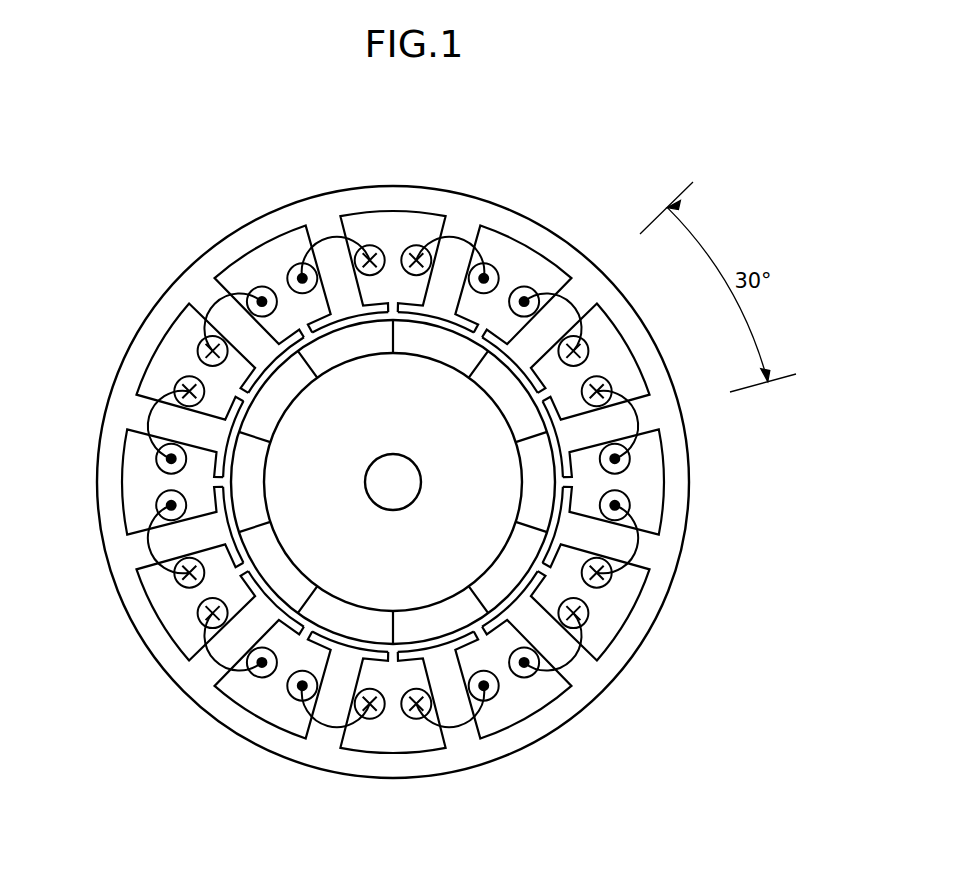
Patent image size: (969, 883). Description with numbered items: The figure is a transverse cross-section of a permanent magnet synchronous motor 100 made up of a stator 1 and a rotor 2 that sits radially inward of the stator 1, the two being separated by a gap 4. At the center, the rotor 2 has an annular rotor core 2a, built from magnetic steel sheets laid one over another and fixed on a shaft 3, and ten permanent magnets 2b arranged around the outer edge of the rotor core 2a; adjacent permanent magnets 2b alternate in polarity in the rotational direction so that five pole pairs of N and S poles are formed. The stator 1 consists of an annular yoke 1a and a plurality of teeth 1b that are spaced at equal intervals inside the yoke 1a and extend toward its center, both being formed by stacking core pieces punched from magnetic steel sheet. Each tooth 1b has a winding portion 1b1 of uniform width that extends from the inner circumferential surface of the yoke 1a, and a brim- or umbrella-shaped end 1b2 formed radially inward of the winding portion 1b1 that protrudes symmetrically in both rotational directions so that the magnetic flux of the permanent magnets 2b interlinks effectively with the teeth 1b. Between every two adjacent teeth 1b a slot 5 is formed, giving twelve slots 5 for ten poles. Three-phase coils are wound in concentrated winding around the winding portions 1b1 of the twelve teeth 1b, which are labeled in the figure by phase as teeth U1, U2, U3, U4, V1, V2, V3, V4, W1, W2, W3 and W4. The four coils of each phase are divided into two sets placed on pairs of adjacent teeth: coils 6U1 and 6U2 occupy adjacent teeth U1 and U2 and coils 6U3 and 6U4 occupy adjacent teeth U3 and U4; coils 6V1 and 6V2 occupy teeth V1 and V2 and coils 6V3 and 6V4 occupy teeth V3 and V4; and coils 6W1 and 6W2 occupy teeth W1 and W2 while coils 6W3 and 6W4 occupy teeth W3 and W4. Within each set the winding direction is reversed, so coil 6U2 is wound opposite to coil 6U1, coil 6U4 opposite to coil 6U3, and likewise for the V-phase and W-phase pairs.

The permanent magnet synchronous motor 100 is at (463, 108).
The stator 1 is at (541, 222).
The yoke 1a is at (660, 408).
The teeth 1b is at (782, 447).
The winding portion 1b1 is at (655, 427).
The end 1b2 is at (568, 452).
The rotor 2 is at (287, 462).
The rotor core 2a is at (300, 490).
The permanent magnets 2b is at (233, 520).
The shaft 3 is at (401, 508).
The gap 4 is at (310, 627).
The slot 5 is at (552, 707).
The coil 6U1 is at (627, 393).
The coil 6U2 is at (575, 300).
The coil 6U3 is at (140, 548).
The coil 6U4 is at (213, 667).
The coil 6V1 is at (460, 237).
The coil 6V2 is at (322, 233).
The coil 6V3 is at (327, 732).
The coil 6V4 is at (457, 730).
The coil 6W1 is at (600, 672).
The coil 6W2 is at (640, 552).
The coil 6W3 is at (210, 298).
The coil 6W4 is at (142, 410).
The tooth U1 is at (622, 431).
The tooth U2 is at (544, 319).
The tooth U3 is at (163, 534).
The tooth U4 is at (234, 648).
The tooth V1 is at (442, 249).
The tooth V2 is at (346, 257).
The tooth V3 is at (341, 717).
The tooth V4 is at (447, 710).
The tooth W1 is at (562, 641).
The tooth W2 is at (634, 531).
The tooth W3 is at (229, 320).
The tooth W4 is at (154, 433).